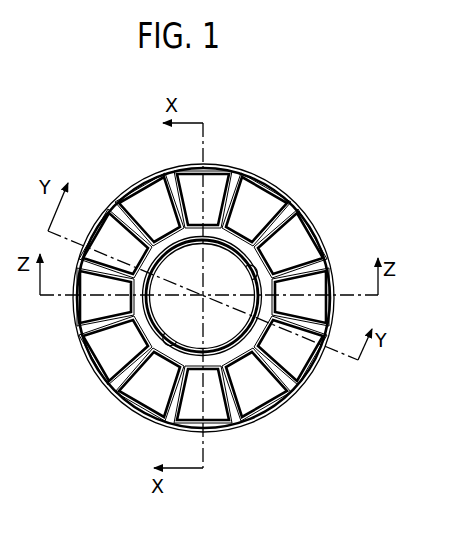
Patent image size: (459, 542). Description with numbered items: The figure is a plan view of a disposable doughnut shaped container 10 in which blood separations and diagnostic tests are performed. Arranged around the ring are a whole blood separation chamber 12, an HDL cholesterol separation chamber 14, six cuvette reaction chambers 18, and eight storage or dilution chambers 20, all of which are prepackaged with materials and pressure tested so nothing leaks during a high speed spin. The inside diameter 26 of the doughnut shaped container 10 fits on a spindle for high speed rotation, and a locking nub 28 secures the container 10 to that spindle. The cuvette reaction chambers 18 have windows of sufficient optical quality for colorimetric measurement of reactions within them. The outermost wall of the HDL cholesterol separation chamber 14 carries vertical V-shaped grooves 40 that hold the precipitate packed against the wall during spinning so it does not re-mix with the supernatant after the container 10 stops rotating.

The doughnut shaped container 10 is at (320, 168).
The whole blood separation chamber 12 is at (204, 430).
The HDL cholesterol separation chamber 14 is at (218, 168).
The cuvette reaction chambers 18 is at (130, 212).
The storage or dilution chambers 20 is at (96, 228).
The inside diameter 26 is at (262, 278).
The locking nub 28 is at (176, 368).
The V-shaped grooves 40 is at (203, 279).